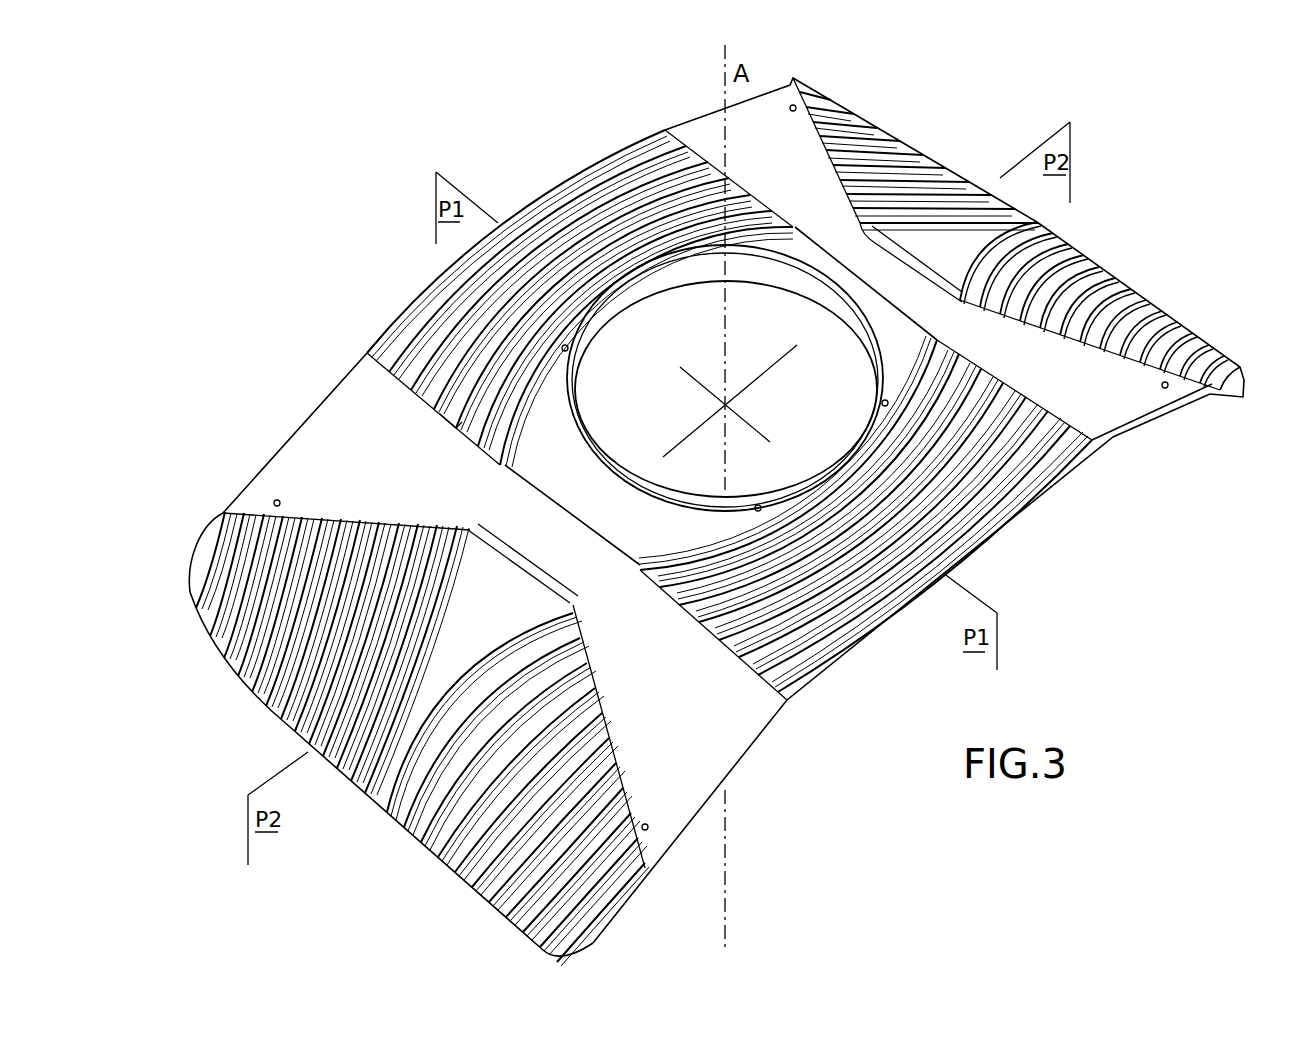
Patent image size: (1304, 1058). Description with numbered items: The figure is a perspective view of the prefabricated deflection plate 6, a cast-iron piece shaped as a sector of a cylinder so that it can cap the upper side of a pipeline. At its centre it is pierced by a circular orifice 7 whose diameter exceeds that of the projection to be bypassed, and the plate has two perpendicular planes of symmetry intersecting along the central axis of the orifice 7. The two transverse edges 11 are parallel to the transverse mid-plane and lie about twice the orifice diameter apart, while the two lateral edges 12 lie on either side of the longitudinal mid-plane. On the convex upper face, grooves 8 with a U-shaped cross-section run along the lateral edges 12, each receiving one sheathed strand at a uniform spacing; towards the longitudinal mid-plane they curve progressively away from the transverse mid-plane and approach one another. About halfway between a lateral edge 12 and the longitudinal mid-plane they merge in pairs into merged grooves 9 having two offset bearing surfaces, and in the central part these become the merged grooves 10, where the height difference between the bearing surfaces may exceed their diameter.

The deflection plate 6 is at (810, 713).
The circular orifice 7 is at (690, 272).
The grooves 8 is at (343, 667).
The merged grooves 9 is at (455, 428).
The merged grooves 10 is at (573, 193).
The transverse edges 11 is at (297, 433).
The lateral edges 12 is at (1163, 310).